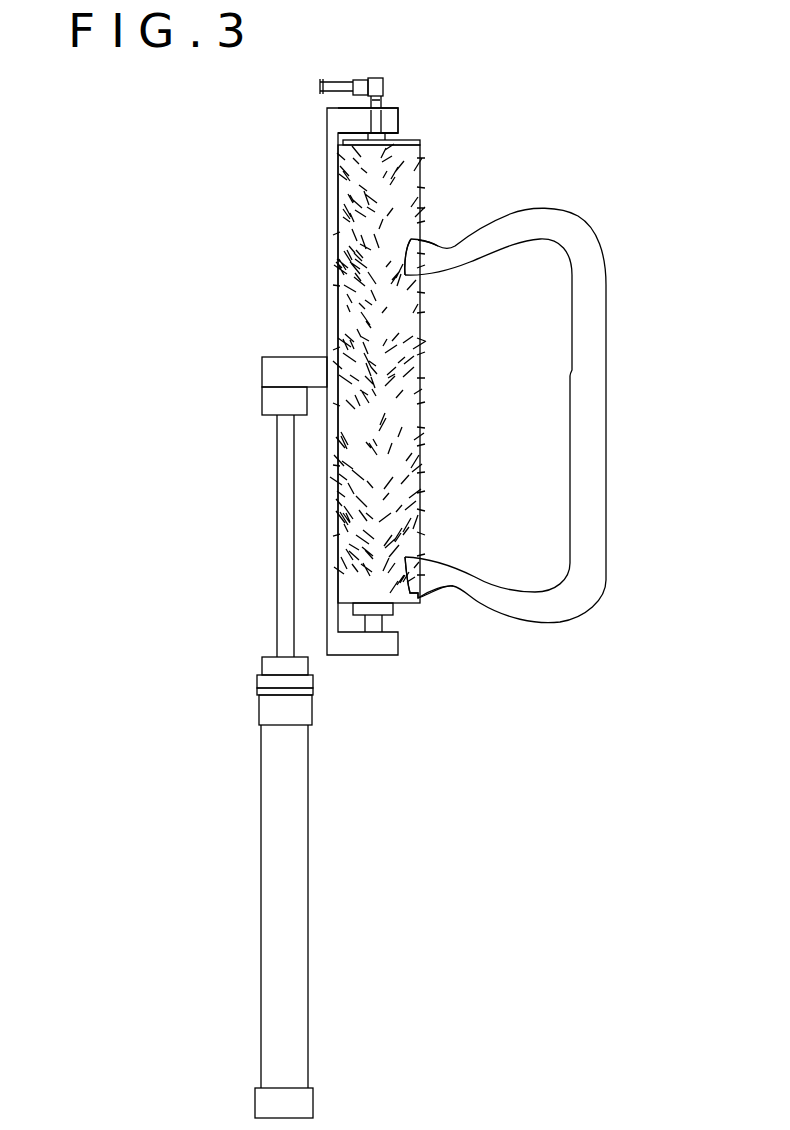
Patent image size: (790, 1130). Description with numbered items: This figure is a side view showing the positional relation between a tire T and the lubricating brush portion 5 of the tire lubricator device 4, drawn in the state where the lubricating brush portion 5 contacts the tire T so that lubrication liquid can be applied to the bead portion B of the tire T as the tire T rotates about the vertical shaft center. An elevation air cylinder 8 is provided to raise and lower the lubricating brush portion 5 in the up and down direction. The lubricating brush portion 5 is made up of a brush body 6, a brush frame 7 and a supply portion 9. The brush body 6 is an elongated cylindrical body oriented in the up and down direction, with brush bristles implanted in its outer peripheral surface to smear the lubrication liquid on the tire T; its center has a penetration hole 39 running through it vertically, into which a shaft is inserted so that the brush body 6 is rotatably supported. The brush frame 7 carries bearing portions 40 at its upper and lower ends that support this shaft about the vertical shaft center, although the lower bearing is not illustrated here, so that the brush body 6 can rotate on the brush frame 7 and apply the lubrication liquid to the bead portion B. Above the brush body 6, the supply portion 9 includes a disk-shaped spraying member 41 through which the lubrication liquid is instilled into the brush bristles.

The tire lubricator device 4 is at (525, 85).
The lubricating brush portion 5 is at (467, 647).
The brush body 6 is at (405, 606).
The brush frame 7 is at (385, 655).
The elevation air cylinder 8 is at (258, 710).
The supply portion 9 is at (378, 78).
The penetration hole 39 is at (393, 129).
The bearing portions 40 is at (397, 136).
The spraying member 41 is at (413, 145).
The bead portion B is at (430, 237).
The tire T is at (606, 338).